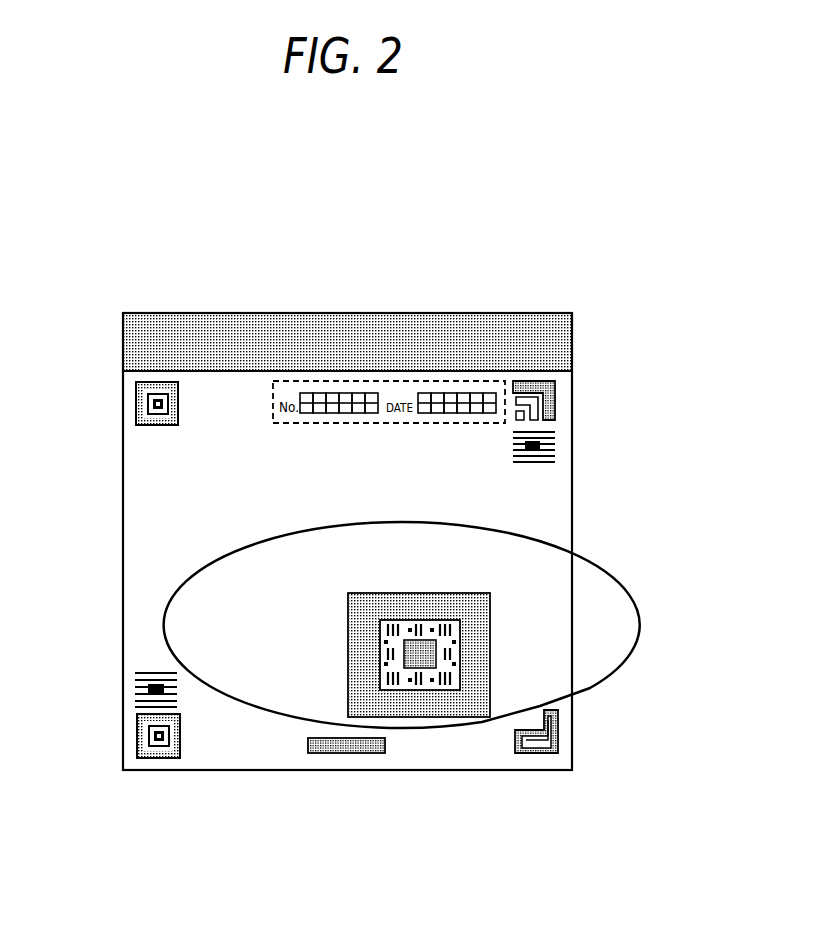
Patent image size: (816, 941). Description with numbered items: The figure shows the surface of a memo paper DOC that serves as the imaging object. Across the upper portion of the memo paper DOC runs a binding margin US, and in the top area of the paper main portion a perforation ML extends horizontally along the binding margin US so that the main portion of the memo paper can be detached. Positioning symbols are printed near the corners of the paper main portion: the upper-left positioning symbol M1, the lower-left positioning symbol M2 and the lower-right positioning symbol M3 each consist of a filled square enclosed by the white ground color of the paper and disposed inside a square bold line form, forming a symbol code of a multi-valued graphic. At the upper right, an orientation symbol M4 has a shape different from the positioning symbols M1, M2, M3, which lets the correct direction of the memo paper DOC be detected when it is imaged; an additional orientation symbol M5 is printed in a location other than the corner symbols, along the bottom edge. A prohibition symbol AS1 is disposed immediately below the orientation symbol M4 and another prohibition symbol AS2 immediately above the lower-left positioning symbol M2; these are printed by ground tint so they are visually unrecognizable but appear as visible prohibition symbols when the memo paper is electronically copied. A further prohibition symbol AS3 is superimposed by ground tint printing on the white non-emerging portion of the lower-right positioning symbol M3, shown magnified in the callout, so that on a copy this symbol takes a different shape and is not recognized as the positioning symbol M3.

The memo paper DOC is at (572, 518).
The binding margin US is at (573, 328).
The perforation ML is at (573, 362).
The positioning symbol M1 is at (136, 405).
The positioning symbol M2 is at (137, 741).
The positioning symbol M3 is at (593, 744).
The orientation symbol M4 is at (556, 400).
The orientation symbol M5 is at (348, 754).
The prohibition symbol AS1 is at (556, 447).
The prohibition symbol AS2 is at (136, 693).
The prohibition symbol AS3 is at (559, 738).